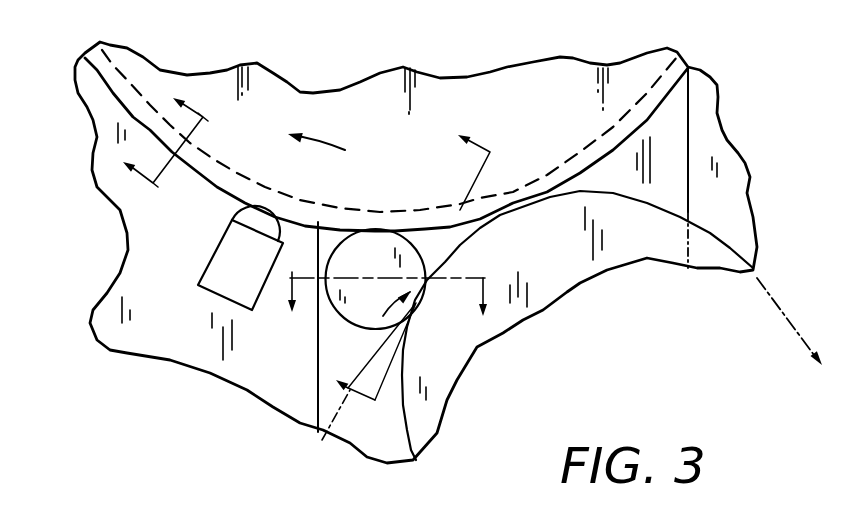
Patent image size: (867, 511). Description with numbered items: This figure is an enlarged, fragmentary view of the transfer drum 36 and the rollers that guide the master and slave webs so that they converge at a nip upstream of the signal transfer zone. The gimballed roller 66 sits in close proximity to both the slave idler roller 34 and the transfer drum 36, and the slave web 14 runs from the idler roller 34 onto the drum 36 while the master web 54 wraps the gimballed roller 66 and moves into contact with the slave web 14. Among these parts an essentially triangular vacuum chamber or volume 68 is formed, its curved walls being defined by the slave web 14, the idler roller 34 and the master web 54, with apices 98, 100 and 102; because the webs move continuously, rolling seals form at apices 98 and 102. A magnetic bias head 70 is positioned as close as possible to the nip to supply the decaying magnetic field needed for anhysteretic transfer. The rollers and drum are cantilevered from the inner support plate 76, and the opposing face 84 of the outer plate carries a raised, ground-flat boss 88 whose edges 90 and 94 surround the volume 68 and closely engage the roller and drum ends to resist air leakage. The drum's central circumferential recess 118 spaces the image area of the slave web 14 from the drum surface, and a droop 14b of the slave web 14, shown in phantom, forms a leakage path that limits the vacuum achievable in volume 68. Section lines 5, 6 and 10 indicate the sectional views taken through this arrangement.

The slave web 14 is at (772, 294).
The droop of slave web 14b is at (449, 220).
The slave idler roller 34 is at (455, 369).
The transfer drum 36 is at (374, 73).
The master web 54 is at (356, 378).
The gimballed roller 66 is at (356, 327).
The vacuum chamber or volume 68 is at (434, 244).
The magnetic bias head 70 is at (221, 257).
The inner support plate 76 is at (323, 325).
The face of outer support plate 84 is at (718, 193).
The boss 88 is at (670, 152).
The edge of boss 90 is at (318, 420).
The edge of boss 94 is at (689, 112).
The apex of volume 98 is at (495, 218).
The apex of volume 100 is at (430, 283).
The apex of volume 102 is at (393, 211).
The central circumferential recess 118 is at (538, 186).
The section line 5- 5 is at (406, 278).
The section line 6- 6 is at (387, 295).
The section line 10- 10 is at (166, 142).